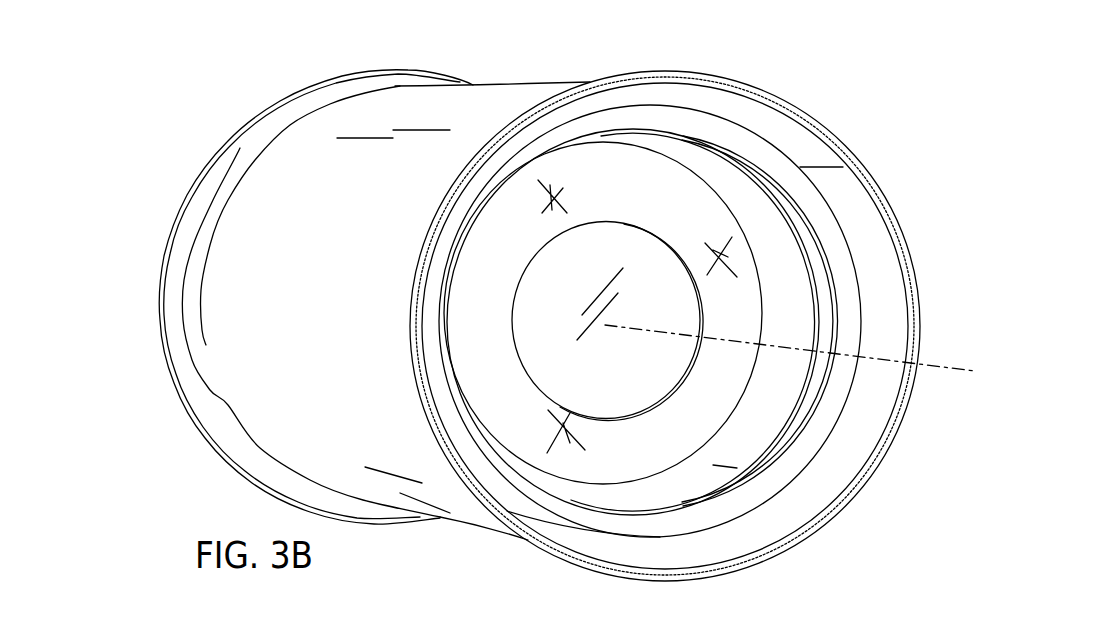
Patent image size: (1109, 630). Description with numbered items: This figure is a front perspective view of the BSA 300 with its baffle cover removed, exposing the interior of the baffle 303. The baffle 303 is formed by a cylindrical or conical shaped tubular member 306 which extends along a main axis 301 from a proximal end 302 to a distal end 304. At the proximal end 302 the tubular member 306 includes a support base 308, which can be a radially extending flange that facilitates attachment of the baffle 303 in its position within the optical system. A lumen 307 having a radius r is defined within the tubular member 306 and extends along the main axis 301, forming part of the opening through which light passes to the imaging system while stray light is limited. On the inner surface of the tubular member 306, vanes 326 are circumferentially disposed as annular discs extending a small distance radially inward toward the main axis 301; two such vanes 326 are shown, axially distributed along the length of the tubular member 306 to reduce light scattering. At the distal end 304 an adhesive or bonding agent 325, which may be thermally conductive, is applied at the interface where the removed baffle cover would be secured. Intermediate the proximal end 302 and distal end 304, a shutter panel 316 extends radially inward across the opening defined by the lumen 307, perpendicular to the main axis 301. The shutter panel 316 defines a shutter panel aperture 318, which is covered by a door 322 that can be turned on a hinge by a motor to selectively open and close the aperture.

The BSA 300 is at (860, 132).
The main axis 301 is at (940, 377).
The proximal end 302 is at (177, 427).
The baffle 303 is at (172, 178).
The distal end 304 is at (827, 548).
The tubular member 306 is at (513, 93).
The lumen 307 is at (845, 458).
The support base 308 is at (268, 130).
The shutter panel 316 is at (738, 315).
The shutter panel aperture 318 is at (532, 386).
The door 322 is at (524, 342).
The adhesive or bonding agent 325 is at (778, 100).
The vanes 326 is at (818, 262).